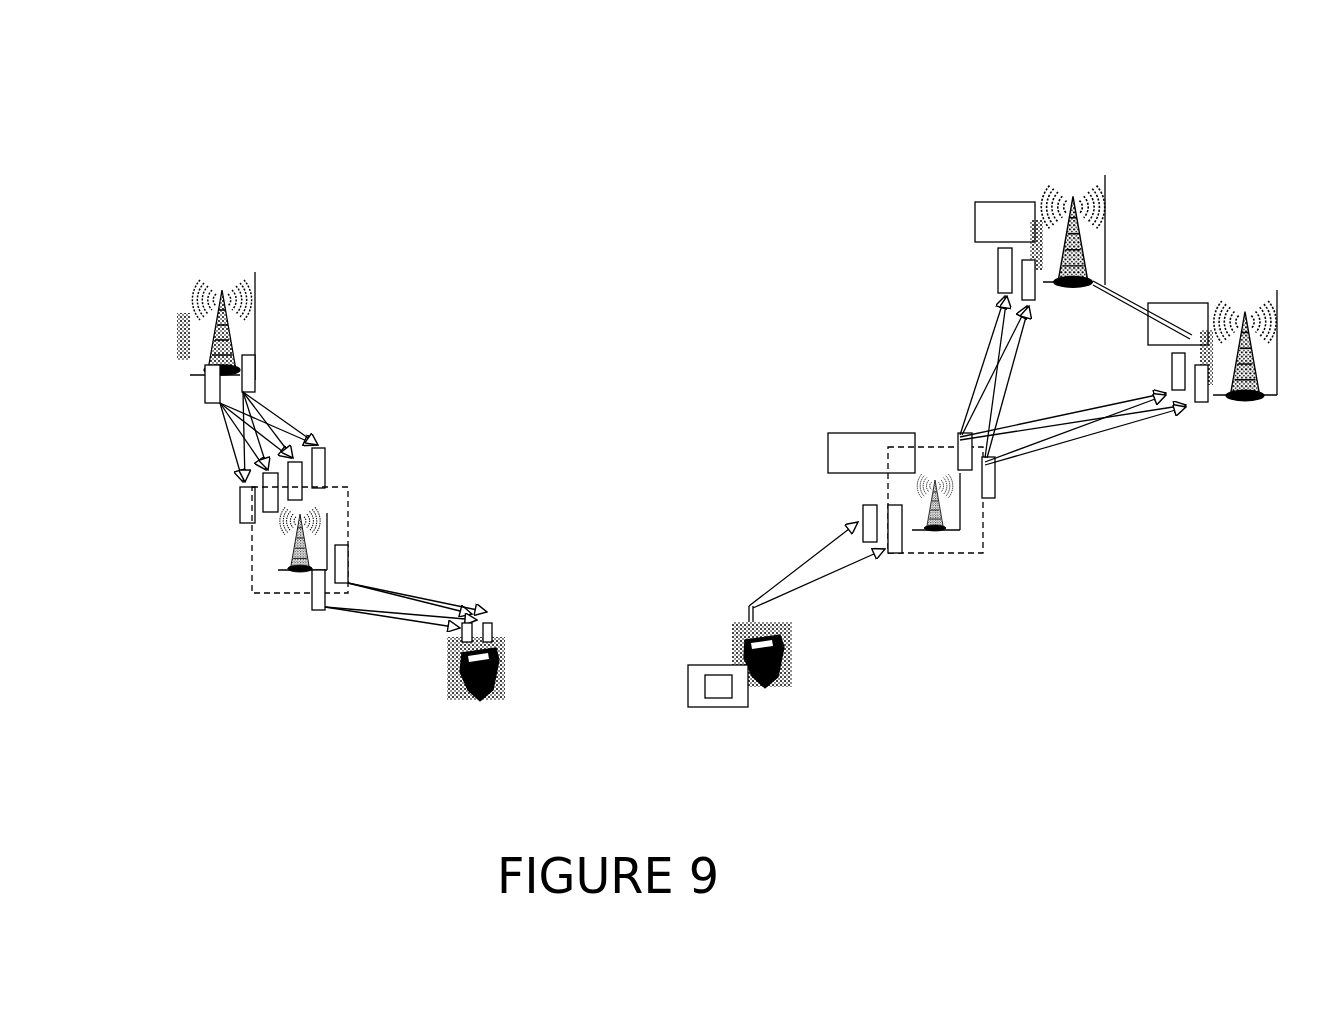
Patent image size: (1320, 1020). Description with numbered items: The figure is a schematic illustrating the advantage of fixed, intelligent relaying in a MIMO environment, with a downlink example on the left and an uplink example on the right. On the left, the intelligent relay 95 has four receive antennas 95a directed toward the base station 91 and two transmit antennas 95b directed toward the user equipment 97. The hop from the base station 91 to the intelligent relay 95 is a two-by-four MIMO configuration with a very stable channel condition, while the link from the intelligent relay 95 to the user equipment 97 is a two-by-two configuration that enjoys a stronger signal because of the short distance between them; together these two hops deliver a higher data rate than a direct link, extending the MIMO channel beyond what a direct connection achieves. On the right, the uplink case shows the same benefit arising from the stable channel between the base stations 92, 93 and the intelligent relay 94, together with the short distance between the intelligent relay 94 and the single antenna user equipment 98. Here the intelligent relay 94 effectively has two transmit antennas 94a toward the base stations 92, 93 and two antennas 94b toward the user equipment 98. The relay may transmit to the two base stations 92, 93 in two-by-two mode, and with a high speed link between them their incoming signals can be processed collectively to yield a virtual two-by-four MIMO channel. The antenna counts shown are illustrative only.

The base station 91 is at (224, 262).
The base station 92 is at (1072, 175).
The base station 93 is at (1245, 283).
The intelligent relay 94 is at (939, 535).
The transmit antennas 94a is at (1037, 488).
The transmit antennas 94b is at (851, 469).
The intelligent relay 95 is at (266, 541).
The receive antennas 95a is at (316, 392).
The transmit antennas 95b is at (380, 551).
The user equipment 97 is at (481, 714).
The user equipment 98 is at (762, 704).